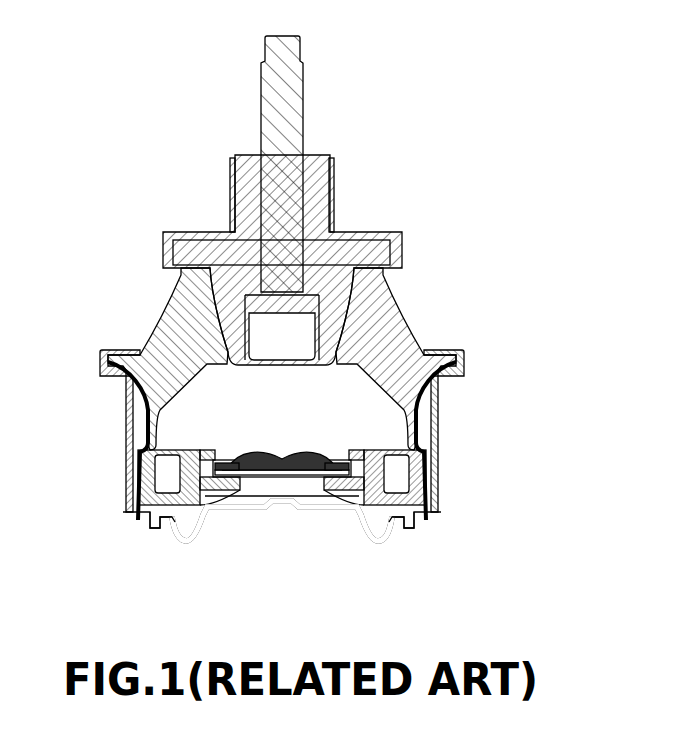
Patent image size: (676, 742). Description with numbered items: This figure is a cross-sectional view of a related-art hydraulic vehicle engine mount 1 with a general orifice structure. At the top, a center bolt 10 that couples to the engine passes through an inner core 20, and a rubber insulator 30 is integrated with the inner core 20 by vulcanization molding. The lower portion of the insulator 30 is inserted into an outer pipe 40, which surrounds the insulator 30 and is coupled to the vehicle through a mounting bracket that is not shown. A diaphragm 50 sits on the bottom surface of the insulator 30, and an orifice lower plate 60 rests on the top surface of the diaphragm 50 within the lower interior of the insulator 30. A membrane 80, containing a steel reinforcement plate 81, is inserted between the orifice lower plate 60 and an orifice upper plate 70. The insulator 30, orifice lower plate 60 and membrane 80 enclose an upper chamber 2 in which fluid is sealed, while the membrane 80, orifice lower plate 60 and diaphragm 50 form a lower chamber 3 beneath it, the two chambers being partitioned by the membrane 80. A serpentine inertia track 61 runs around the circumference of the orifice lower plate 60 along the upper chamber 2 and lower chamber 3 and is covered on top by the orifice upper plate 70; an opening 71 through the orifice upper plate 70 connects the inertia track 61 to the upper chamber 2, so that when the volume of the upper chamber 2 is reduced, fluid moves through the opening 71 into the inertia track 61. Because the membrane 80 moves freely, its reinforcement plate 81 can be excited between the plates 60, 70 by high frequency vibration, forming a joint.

The vehicle engine mount 1 is at (456, 184).
The upper chamber 2 is at (340, 397).
The lower chamber 3 is at (242, 496).
The center bolt 10 is at (290, 92).
The inner core 20 is at (227, 252).
The insulator 30 is at (170, 320).
The outer pipe 40 is at (437, 422).
The diaphragm 50 is at (333, 530).
The orifice lower plate 60 is at (372, 543).
The inertia track 61 is at (397, 477).
The orifice upper plate 70 is at (170, 517).
The opening 71 is at (160, 472).
The membrane 80 is at (308, 457).
The reinforcement plate 81 is at (227, 495).